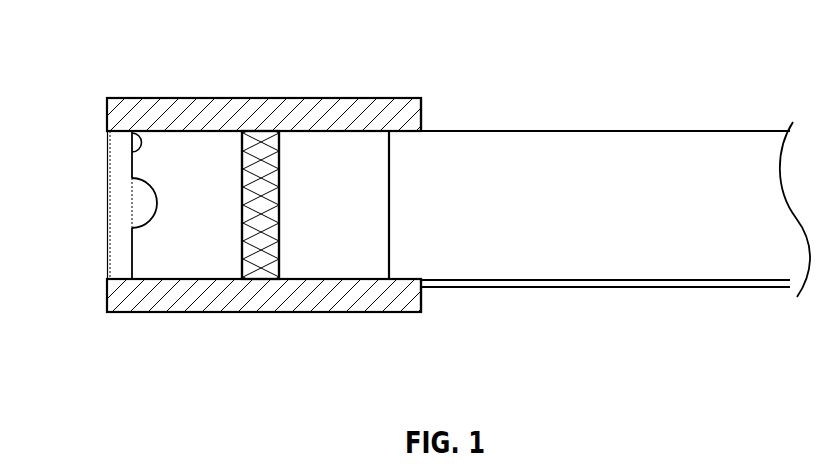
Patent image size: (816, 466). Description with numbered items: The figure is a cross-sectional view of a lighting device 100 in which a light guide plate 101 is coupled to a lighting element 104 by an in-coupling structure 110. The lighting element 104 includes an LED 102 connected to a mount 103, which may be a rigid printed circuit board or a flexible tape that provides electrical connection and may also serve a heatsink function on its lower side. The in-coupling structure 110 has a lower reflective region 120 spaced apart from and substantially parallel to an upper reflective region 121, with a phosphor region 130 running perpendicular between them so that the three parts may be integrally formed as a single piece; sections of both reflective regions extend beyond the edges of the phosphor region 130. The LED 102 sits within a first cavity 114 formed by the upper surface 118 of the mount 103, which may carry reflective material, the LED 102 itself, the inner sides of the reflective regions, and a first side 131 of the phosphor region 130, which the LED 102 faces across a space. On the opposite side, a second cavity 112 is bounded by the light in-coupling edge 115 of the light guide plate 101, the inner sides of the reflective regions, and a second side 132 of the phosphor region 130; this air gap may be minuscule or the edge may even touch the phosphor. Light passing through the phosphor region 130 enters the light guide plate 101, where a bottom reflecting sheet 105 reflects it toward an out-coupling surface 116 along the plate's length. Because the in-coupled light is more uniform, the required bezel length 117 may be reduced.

The lighting device 100 is at (305, 44).
The light guide plate 101 is at (698, 260).
The LED 102 is at (142, 197).
The mount 103 is at (113, 253).
The lighting element 104 is at (107, 178).
The bottom reflecting sheet 105 is at (605, 287).
The in-coupling structure 110 is at (256, 331).
The second cavity 112 is at (327, 147).
The first cavity 114 is at (192, 142).
The light in-coupling edge 115 is at (390, 245).
The out-coupling surface 116 is at (614, 131).
The bezel length 117 is at (387, 88).
The upper surface of the mount 118 is at (131, 136).
The lower reflective region 120 is at (153, 302).
The upper reflective region 121 is at (243, 107).
The phosphor region 130 is at (263, 263).
The first side of the phosphor region 131 is at (261, 262).
The second side of the phosphor region 132 is at (261, 262).